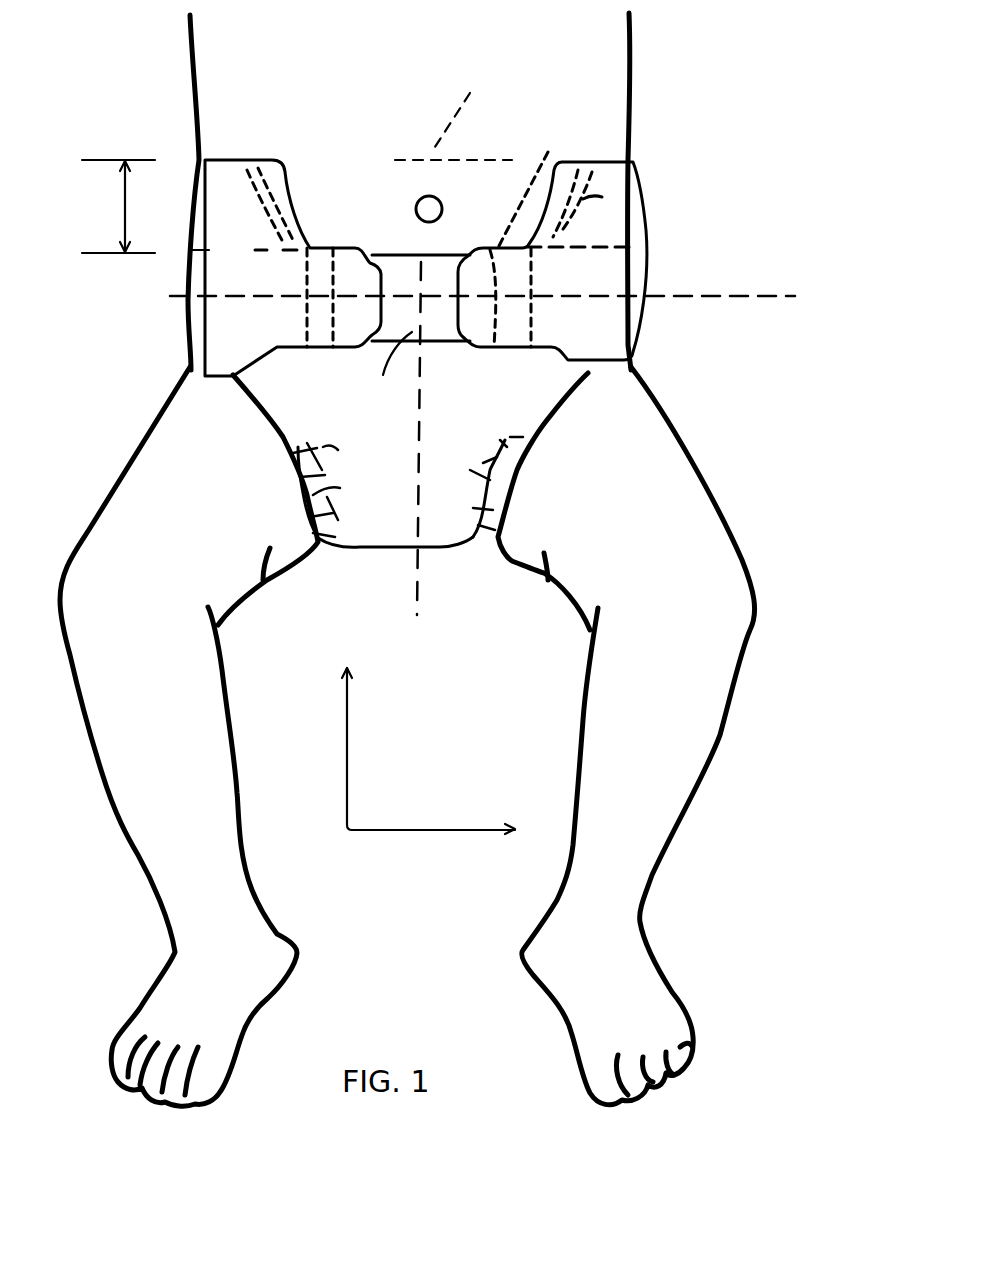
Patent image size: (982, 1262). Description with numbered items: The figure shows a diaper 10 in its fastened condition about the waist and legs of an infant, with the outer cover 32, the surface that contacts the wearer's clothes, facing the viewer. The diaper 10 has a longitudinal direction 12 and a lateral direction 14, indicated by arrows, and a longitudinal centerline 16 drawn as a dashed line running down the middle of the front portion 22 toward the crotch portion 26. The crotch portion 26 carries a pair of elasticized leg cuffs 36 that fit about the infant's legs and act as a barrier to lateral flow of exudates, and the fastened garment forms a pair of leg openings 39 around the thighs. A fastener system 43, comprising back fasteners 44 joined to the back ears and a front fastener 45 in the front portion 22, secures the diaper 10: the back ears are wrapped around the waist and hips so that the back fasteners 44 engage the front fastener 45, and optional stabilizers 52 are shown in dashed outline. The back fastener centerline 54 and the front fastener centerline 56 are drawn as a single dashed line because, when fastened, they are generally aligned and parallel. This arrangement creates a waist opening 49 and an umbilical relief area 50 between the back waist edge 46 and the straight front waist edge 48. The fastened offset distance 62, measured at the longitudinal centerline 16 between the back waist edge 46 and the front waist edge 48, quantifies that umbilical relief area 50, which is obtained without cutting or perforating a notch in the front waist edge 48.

The diaper 10 is at (167, 282).
The longitudinal direction 12 is at (347, 742).
The lateral direction 14 is at (440, 838).
The longitudinal centerline 16 is at (410, 610).
The front portion 22 is at (488, 365).
The crotch portion 26 is at (649, 254).
The outer cover 32 is at (430, 471).
The leg cuffs 36 is at (524, 473).
The leg openings 39 is at (272, 447).
The fastener system 43 is at (337, 198).
The back fasteners 44 is at (552, 237).
The front fastener 45 is at (413, 372).
The back waist edge 46 is at (247, 160).
The front waist edge 48 is at (375, 256).
The waist opening 49 is at (215, 150).
The umbilical relief area 50 is at (475, 178).
The stabilizers 52 is at (298, 160).
The back fastener centerline 54 is at (712, 288).
The front fastener centerline 56 is at (708, 302).
The fastened offset distance 62 is at (120, 205).